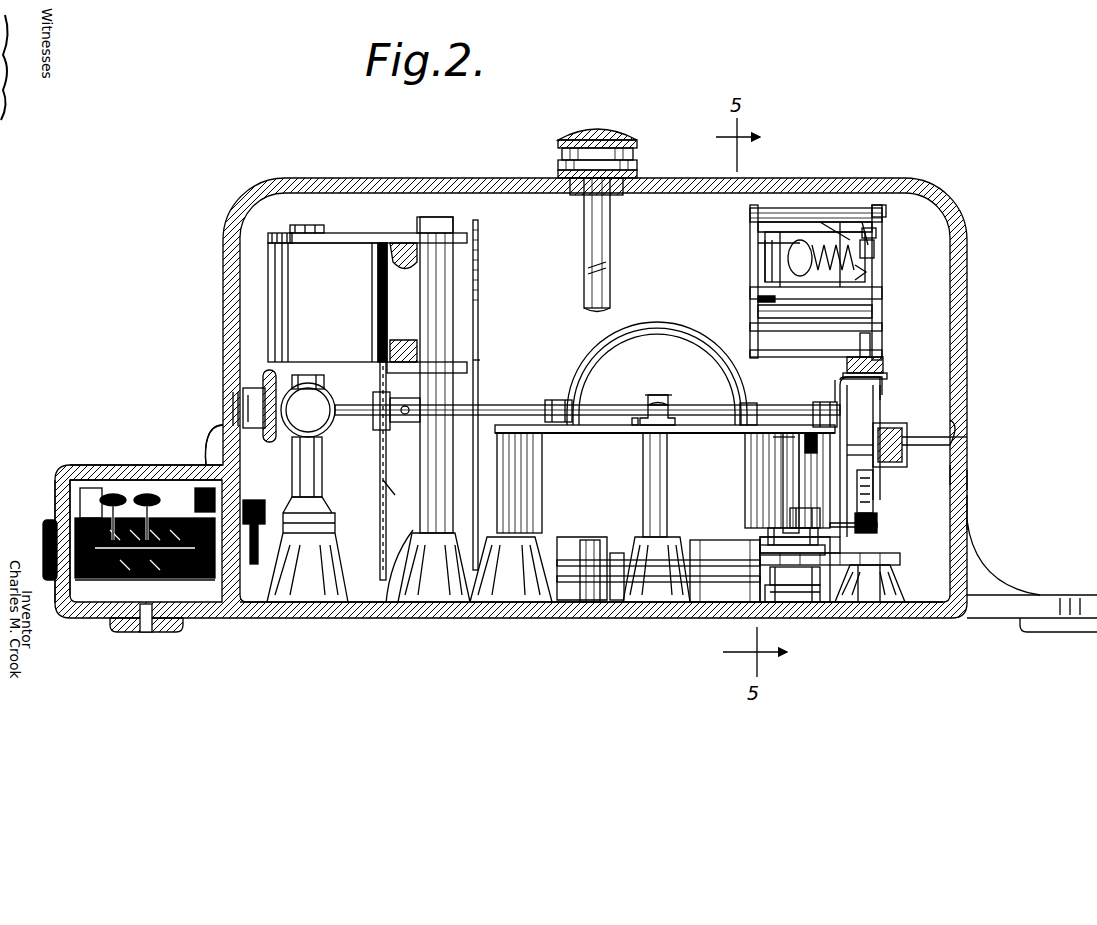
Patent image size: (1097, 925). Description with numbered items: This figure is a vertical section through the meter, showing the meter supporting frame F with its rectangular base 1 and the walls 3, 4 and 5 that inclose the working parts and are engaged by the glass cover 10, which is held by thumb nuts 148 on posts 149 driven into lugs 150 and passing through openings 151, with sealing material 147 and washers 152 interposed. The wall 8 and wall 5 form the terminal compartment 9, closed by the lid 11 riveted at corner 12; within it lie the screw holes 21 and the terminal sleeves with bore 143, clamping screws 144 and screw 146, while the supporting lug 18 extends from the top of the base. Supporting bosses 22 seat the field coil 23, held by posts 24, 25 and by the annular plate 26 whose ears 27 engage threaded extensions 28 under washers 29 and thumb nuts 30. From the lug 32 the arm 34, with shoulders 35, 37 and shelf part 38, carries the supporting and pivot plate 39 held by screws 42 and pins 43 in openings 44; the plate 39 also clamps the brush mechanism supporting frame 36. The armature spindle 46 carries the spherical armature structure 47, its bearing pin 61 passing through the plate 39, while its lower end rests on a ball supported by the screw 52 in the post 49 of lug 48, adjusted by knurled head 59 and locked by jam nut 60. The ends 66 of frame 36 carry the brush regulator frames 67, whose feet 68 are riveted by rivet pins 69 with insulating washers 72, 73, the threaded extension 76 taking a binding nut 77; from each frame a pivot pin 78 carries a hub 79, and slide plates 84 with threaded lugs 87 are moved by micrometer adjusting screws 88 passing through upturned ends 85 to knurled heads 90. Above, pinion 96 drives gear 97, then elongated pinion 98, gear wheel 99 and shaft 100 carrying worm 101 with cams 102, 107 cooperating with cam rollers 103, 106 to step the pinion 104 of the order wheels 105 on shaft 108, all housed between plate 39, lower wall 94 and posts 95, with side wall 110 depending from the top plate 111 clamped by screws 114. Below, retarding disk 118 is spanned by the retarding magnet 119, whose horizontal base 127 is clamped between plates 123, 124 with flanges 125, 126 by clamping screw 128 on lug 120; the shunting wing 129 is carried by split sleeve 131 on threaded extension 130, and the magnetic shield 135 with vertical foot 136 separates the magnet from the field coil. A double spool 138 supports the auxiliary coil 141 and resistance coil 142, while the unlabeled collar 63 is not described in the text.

The rectangular base 1 is at (542, 620).
The wall 3 is at (970, 467).
The wall 4 is at (968, 517).
The wall 5 is at (240, 497).
The wall 8 is at (62, 500).
The terminal compartment 9 is at (115, 590).
The cover 10 is at (256, 196).
The lid 11 is at (88, 470).
The corner 12 is at (203, 462).
The supporting lug 18 is at (1058, 598).
The screw holes 21 is at (157, 625).
The supporting bosses 22 is at (497, 590).
The field coil 23 is at (506, 468).
The pins or posts 24 is at (525, 508).
The posts 25 is at (653, 490).
The annular plate 26 is at (595, 428).
The ears 27 is at (692, 425).
The threaded extensions 28 is at (658, 395).
The washers 29 is at (632, 418).
The thumb nuts 30 is at (660, 395).
The lug 32 is at (872, 592).
The arm 34 is at (872, 500).
The shoulders 35 is at (812, 567).
The brush mechanism supporting frame 36 is at (863, 597).
The shoulders 37 is at (893, 467).
The shelf parts 38 is at (888, 428).
The supporting and pivot plate 39 is at (877, 400).
The screws 42 is at (905, 437).
The pins 43 is at (882, 420).
The openings 44 is at (848, 387).
The armature spindle 46 is at (527, 410).
The spherical armature structure 47 is at (635, 312).
The lug 48 is at (298, 588).
The post 49 is at (320, 465).
The screw 52 is at (267, 388).
The knurled head 59 is at (237, 397).
The jam nut 60 is at (283, 375).
The bearing pin 61 is at (878, 443).
The collar 63 is at (817, 402).
The ends 66 is at (752, 582).
The brush regulator frame 67 is at (830, 378).
The foot 68 is at (763, 540).
The rivet pin 69 is at (800, 590).
The insulating washer 72 is at (790, 553).
The insulating washer 73 is at (757, 578).
The threaded extension 76 is at (805, 518).
The binding nut 77 is at (785, 535).
The pivot pin 78 is at (773, 403).
The hub or collar 79 is at (773, 437).
The slide plates 84 is at (870, 520).
The upturned end 85 is at (878, 372).
The threaded lug 87 is at (859, 463).
The micrometer adjusting screw 88 is at (968, 478).
The knurled head 90 is at (893, 350).
The lower wall 94 is at (765, 250).
The posts 95 is at (812, 210).
The pinion 96 is at (815, 435).
The gear 97 is at (858, 336).
The elongated pinion 98 is at (752, 296).
The gear wheel 99 is at (770, 245).
The shaft 100 is at (750, 265).
The worm 101 is at (880, 246).
The cylindrical cam 102 is at (810, 225).
The cam roller 103 is at (805, 295).
The pinion 104 is at (842, 222).
The order wheels 105 is at (782, 215).
The top cam roller 106 is at (878, 270).
The cylindrical cam 107 is at (815, 311).
The shaft 108 is at (840, 230).
The side wall 110 is at (892, 212).
The top plate 111 is at (878, 231).
The screws 114 is at (866, 225).
The retarding disk 118 is at (380, 520).
The retarding magnet 119 is at (270, 300).
The lug 120 is at (430, 590).
The clamping plate 123 is at (408, 240).
The clamping plate 124 is at (478, 363).
The flange 125 is at (387, 238).
The flange 126 is at (387, 363).
The horizontal base 127 is at (406, 242).
The clamping screw 128 is at (423, 487).
The shunting member or wing 129 is at (282, 232).
The threaded extension 130 is at (328, 372).
The split sleeve 131 is at (290, 238).
The magnetic shield 135 is at (479, 293).
The vertical foot 136 is at (386, 603).
The double spool 138 is at (618, 552).
The auxiliary coil 141 is at (658, 553).
The resistance coil 142 is at (610, 547).
The bore 143 is at (93, 517).
The clamping screws 144 is at (147, 498).
The screw 146 is at (243, 508).
The sealing material 147 is at (958, 420).
The thumb nuts 148 is at (617, 131).
The posts 149 is at (583, 270).
The lugs 150 is at (581, 605).
The openings 151 is at (613, 197).
The washers 152 is at (560, 172).
The meter supporting frame F is at (963, 503).